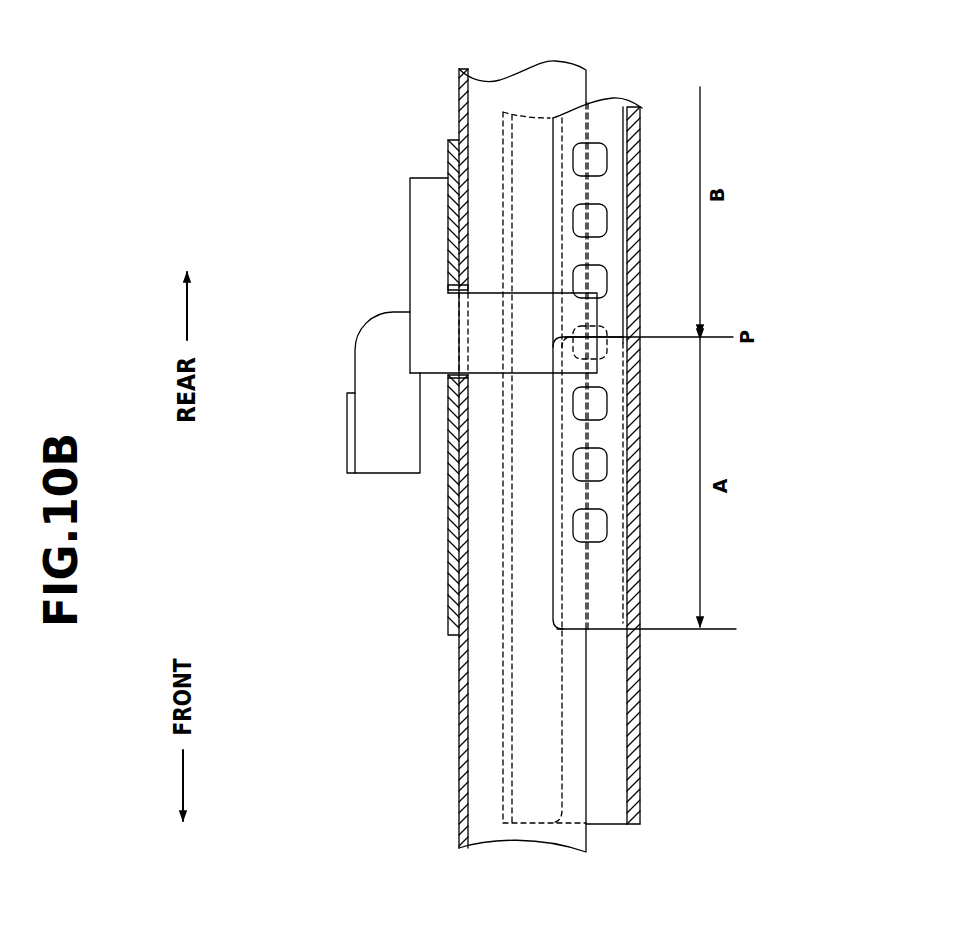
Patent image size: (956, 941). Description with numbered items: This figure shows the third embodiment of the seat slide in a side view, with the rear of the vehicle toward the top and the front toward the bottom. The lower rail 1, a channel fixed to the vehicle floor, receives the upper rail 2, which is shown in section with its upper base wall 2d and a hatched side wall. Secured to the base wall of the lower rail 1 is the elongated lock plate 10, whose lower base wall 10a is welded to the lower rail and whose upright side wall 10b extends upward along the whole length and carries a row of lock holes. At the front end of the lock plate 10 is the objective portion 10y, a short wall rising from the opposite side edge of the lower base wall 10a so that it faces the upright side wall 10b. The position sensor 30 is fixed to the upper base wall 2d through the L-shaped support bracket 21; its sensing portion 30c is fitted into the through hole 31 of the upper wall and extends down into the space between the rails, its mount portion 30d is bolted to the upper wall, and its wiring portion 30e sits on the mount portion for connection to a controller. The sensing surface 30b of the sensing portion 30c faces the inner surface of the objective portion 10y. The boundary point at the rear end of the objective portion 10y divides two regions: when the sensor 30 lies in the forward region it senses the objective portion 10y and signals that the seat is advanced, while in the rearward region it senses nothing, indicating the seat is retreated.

The lower rail 1 is at (603, 805).
The upper rail 2 is at (451, 784).
The upper base wall 2d is at (457, 725).
The lock plate 10 is at (551, 415).
The lower base wall 10a is at (627, 107).
The upright side wall 10b is at (610, 250).
The objective portion 10y is at (598, 617).
The support bracket 21 is at (447, 582).
The position sensor 30 is at (413, 279).
The sensing surface 30b is at (481, 319).
The sensing portion 30c is at (487, 389).
The mount portion 30d is at (425, 208).
The wiring portion 30e is at (373, 378).
The through hole 31 is at (462, 290).